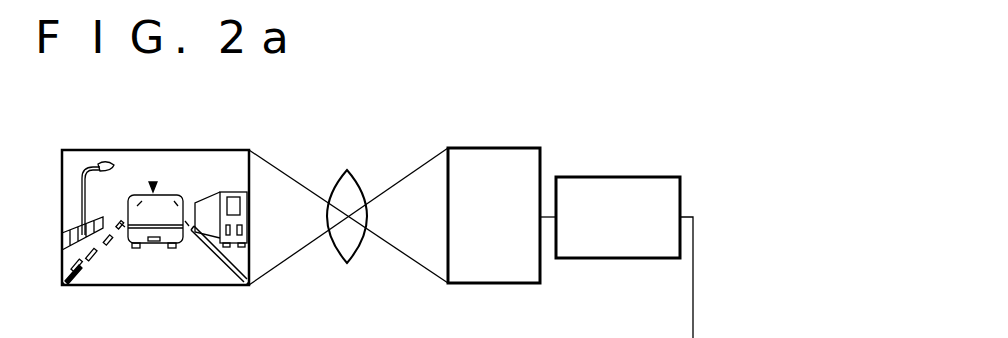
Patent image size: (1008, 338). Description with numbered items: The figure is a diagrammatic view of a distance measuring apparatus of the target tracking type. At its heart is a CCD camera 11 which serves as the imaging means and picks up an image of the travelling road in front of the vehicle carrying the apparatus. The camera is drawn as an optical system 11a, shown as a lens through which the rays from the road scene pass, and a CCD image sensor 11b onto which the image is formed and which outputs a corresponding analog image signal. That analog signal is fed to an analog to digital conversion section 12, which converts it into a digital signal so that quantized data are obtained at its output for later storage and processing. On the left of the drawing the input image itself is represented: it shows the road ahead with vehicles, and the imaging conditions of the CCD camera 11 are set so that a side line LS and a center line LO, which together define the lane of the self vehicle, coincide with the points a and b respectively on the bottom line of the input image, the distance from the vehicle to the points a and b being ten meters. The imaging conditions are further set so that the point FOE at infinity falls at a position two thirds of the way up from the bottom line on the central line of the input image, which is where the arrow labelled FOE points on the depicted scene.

The CCD camera 11 is at (353, 105).
The optical system 11a is at (356, 173).
The CCD image sensor 11b is at (468, 149).
The analog to digital conversion section 12 is at (633, 174).
The point at infinity FOE is at (155, 182).
The side line LS is at (77, 271).
The center line LO is at (223, 262).
The point a is at (62, 286).
The point b is at (249, 287).